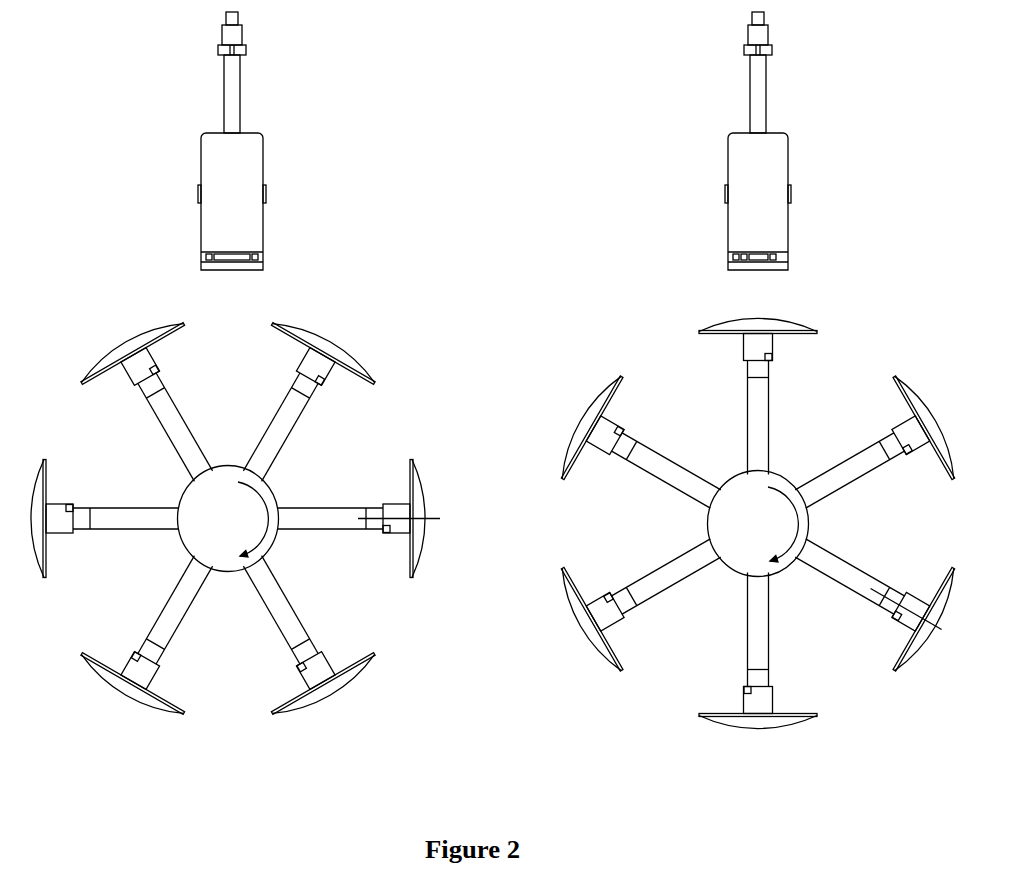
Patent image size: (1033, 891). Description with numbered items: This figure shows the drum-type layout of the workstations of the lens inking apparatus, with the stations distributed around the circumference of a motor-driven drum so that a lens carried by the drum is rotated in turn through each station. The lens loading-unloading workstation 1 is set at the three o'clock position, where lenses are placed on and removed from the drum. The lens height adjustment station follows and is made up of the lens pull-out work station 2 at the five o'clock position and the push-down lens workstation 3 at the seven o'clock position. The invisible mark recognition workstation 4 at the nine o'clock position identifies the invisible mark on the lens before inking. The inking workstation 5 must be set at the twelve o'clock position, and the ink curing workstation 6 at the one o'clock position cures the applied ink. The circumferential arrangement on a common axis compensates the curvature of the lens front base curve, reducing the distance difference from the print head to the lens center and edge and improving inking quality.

The lens loading-unloading workstation 1 is at (358, 499).
The lens pull-out work station 2 is at (291, 627).
The push-down lens workstation 3 is at (166, 627).
The invisible mark recognition workstation 4 is at (105, 494).
The inking workstation 5 is at (728, 396).
The ink curing workstation 6 is at (291, 408).